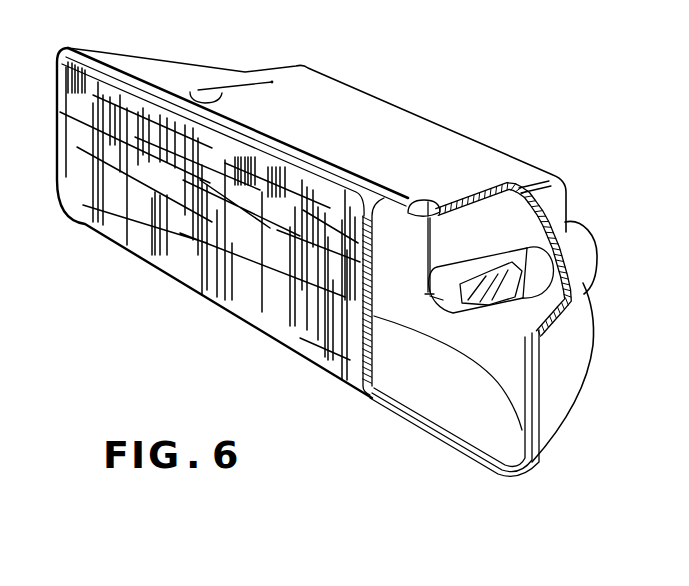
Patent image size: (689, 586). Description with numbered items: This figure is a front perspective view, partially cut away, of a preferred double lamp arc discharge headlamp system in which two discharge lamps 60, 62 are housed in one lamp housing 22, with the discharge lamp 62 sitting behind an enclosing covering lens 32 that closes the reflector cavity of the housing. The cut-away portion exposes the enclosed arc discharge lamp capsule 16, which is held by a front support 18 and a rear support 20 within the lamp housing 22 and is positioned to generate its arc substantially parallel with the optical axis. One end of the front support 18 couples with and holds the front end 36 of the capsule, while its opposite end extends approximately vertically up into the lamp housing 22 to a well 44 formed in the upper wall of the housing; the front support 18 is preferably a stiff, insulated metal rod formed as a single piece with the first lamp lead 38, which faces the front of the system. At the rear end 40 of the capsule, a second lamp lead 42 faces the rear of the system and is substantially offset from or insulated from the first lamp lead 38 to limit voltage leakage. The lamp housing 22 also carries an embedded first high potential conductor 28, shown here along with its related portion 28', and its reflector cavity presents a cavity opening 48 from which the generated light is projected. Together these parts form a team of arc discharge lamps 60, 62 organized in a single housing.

The arc discharge lamp capsule 16 is at (483, 293).
The front support 18 is at (427, 257).
The rear support 20 is at (542, 283).
The lamp housing 22 is at (573, 396).
The first high potential conductor 28 is at (504, 244).
The rim flange portion 28' is at (235, 209).
The covering lens 32 is at (252, 322).
The front end 36 is at (446, 302).
The first lamp lead 38 is at (454, 290).
The rear end 40 is at (518, 297).
The second lamp lead 42 is at (527, 263).
The well 44 is at (201, 97).
The cavity opening 48 is at (399, 419).
The discharge lamp 60 is at (346, 400).
The discharge lamp 62 is at (141, 278).